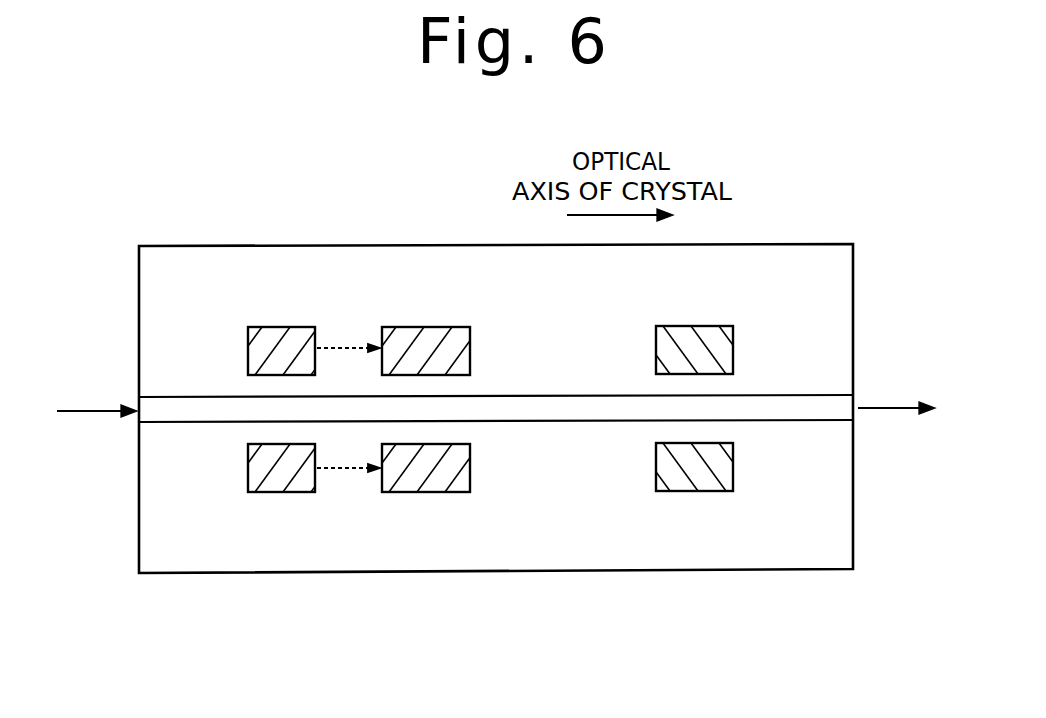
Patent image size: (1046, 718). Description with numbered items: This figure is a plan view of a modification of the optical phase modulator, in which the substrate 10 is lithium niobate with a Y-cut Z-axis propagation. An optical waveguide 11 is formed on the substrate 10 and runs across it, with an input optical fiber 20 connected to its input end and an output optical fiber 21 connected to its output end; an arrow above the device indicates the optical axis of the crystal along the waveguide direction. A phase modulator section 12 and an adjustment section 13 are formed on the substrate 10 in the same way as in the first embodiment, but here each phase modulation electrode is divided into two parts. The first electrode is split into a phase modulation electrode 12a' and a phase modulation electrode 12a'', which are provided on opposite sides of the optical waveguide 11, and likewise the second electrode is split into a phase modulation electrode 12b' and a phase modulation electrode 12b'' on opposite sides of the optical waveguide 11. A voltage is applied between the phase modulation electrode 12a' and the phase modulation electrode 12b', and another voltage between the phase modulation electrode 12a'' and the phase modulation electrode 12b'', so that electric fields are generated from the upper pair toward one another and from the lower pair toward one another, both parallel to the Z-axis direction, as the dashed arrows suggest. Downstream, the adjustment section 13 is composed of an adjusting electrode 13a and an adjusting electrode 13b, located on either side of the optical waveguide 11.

The substrate 10 is at (790, 245).
The optical waveguide 11 is at (178, 397).
The phase modulator section 12 is at (331, 434).
The phase modulation electrode 12a' is at (286, 279).
The phase modulation electrode 12b' is at (434, 279).
The phase modulation electrode 12a'' is at (287, 505).
The phase modulation electrode 12b'' is at (434, 505).
The adjustment section 13 is at (655, 472).
The adjusting electrode 13a is at (695, 338).
The adjusting electrode 13b is at (702, 480).
The input optical fiber 20 is at (82, 408).
The output optical fiber 21 is at (888, 407).